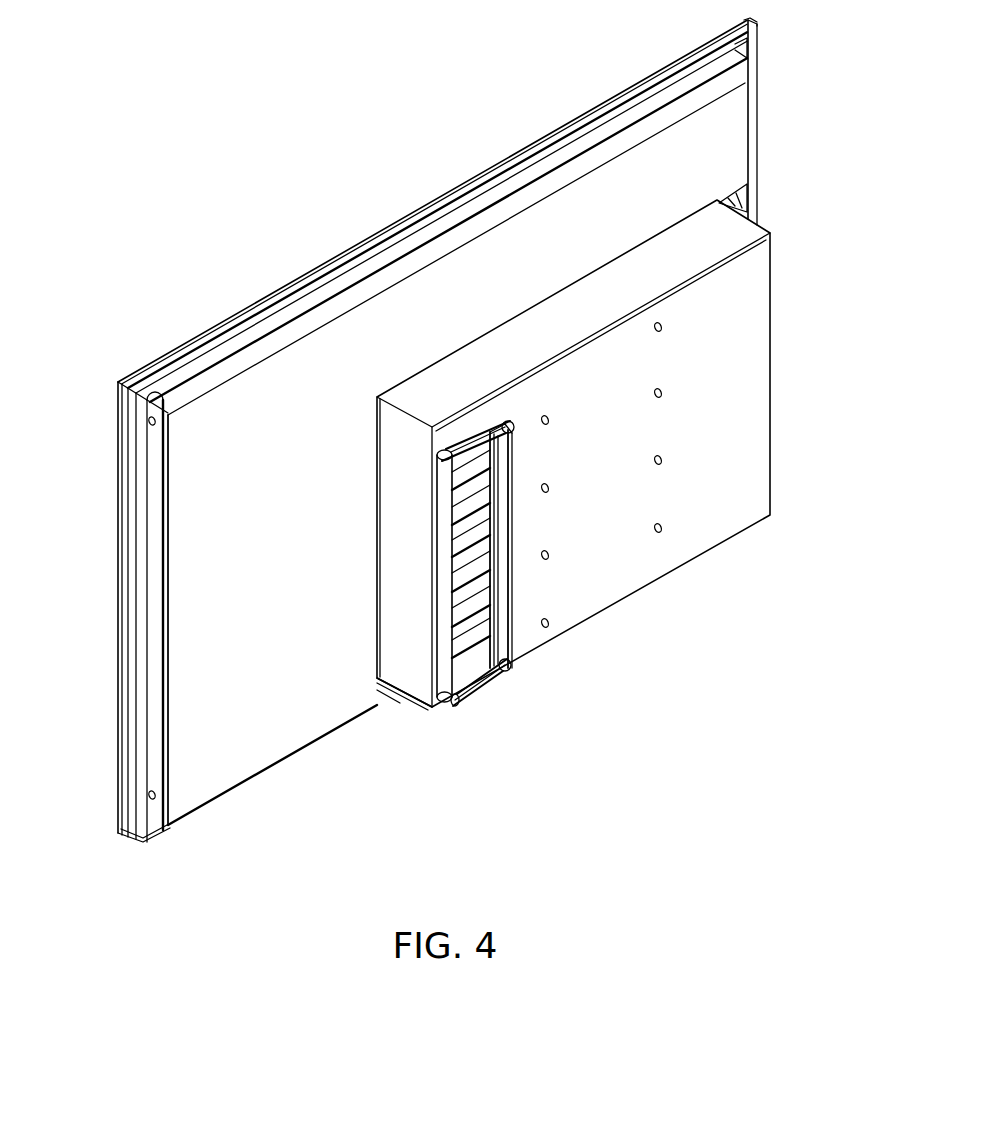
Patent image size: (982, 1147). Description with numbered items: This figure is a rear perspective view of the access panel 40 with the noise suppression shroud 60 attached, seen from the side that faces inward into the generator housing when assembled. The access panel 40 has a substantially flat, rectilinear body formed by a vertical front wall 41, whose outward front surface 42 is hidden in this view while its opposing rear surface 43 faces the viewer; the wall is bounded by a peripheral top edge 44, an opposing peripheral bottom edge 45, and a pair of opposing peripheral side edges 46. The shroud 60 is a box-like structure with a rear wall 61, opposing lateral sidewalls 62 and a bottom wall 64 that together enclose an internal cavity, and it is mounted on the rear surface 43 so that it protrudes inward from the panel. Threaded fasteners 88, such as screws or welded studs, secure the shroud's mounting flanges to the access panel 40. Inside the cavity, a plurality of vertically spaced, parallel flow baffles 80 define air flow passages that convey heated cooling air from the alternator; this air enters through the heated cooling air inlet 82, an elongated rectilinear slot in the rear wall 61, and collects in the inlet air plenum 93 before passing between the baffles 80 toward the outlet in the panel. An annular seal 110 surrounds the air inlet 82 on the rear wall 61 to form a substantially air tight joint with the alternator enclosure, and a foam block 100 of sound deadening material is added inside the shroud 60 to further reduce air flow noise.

The access panel 40 is at (243, 226).
The front wall 41 is at (336, 246).
The front surface 42 is at (108, 458).
The rear surface 43 is at (745, 205).
The peripheral top edge 44 is at (447, 190).
The peripheral bottom edge 45 is at (200, 808).
The peripheral side edges 46 is at (760, 95).
The noise suppression shroud 60 is at (742, 416).
The rear wall 61 is at (727, 520).
The lateral sidewalls 62 is at (772, 328).
The bottom wall 64 is at (413, 705).
The flow baffles 80 is at (473, 563).
The heated cooling air inlet 82 is at (493, 610).
The threaded fasteners 88 is at (662, 462).
The inlet air plenum 93 is at (465, 660).
The foam block 100 is at (290, 715).
The annular seal 110 is at (512, 590).